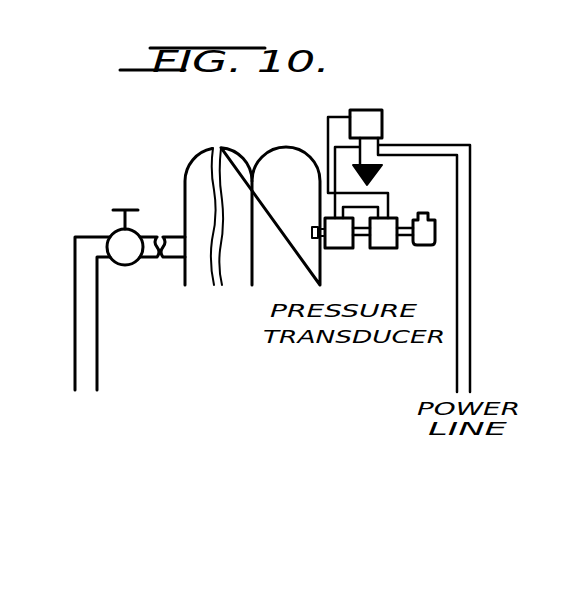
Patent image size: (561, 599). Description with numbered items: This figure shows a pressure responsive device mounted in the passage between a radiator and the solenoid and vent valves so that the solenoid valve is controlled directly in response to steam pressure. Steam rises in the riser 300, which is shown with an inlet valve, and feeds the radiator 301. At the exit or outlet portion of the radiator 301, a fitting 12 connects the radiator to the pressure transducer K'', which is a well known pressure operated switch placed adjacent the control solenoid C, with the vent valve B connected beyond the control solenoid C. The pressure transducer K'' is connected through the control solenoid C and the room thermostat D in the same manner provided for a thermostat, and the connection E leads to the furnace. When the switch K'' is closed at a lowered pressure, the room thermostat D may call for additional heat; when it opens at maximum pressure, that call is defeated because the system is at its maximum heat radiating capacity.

The riser 300 is at (97, 370).
The radiator 301 is at (305, 241).
The tank wall fitting 12 is at (312, 234).
The room thermostat D is at (366, 124).
The connection to the furnace E is at (382, 173).
The pressure transducer K'' is at (348, 257).
The control solenoid valve C is at (383, 248).
The vent valve B is at (424, 245).